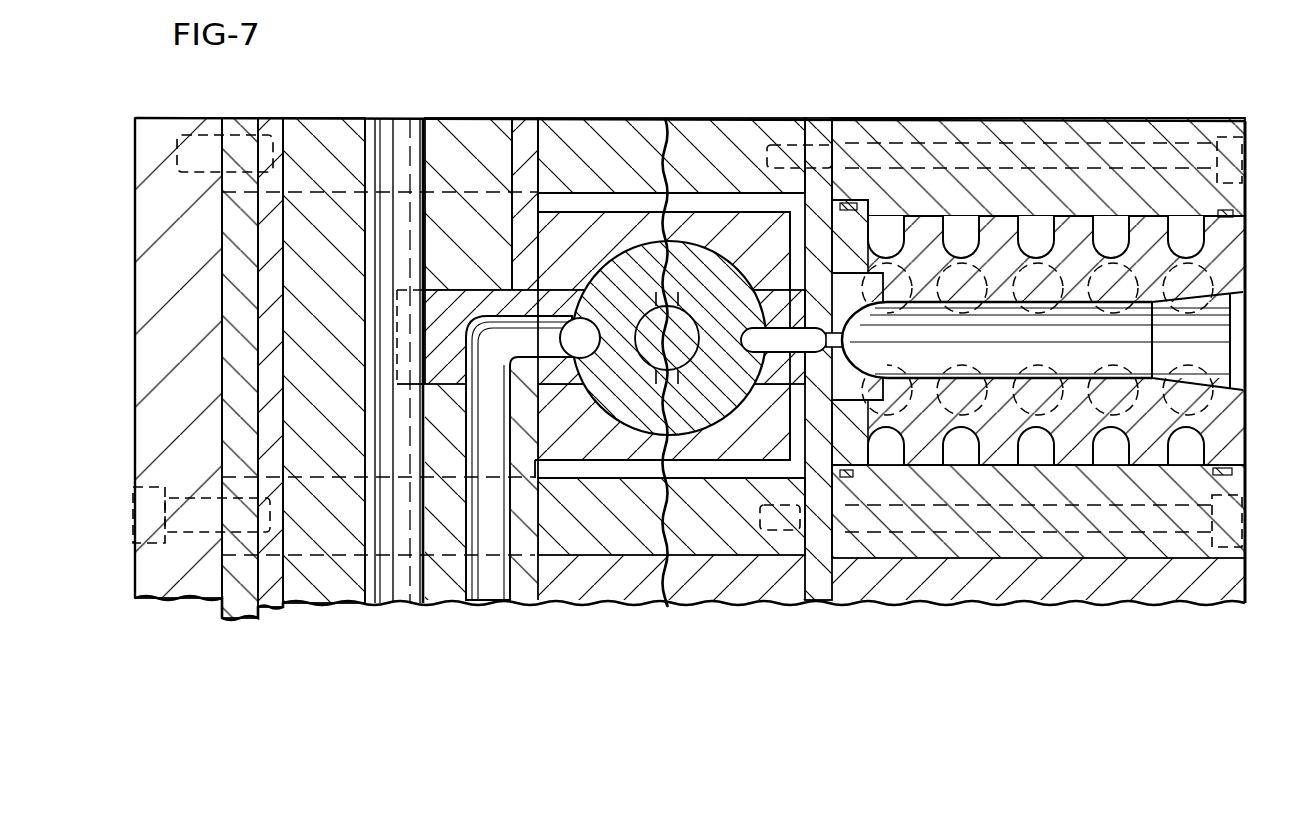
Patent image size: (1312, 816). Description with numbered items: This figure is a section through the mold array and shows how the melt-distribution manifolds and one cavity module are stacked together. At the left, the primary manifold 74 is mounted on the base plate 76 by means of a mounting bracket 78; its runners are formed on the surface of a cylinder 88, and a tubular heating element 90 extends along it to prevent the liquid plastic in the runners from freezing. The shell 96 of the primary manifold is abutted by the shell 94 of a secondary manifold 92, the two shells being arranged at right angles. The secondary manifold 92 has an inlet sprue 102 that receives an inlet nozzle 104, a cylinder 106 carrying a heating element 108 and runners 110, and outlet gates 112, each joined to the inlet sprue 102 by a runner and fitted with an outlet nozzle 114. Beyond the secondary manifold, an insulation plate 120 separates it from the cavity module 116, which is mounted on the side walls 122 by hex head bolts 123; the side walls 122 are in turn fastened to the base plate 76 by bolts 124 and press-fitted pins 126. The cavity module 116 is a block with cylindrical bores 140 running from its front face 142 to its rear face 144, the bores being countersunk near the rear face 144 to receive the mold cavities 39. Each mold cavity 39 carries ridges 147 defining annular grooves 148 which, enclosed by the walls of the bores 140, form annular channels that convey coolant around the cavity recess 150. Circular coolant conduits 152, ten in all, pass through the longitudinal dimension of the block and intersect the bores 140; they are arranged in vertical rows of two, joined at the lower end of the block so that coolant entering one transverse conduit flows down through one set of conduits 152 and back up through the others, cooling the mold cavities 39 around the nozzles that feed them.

The mold cavity 39 is at (1240, 263).
The primary manifold 74 is at (392, 618).
The base plate 76 is at (160, 135).
The mounting bracket 78 is at (240, 612).
The cylinder 88 is at (330, 590).
The tubular heating element 90 is at (408, 590).
The secondary manifold 92 is at (597, 490).
The shell 94 is at (578, 462).
The shell 96 is at (270, 600).
The inlet sprue 102 is at (538, 300).
The inlet nozzle 104 is at (574, 300).
The cylinder 106 is at (635, 425).
The heating element 108 is at (700, 425).
The runner 110 is at (752, 318).
The outlet gate 112 is at (775, 300).
The outlet nozzle 114 is at (676, 208).
The cavity module 116 is at (1027, 102).
The insulation plate 120 is at (820, 540).
The side wall 122 is at (733, 133).
The hex head bolt 123 is at (1222, 137).
The bolt 124 is at (156, 548).
The press-fitted pin 126 is at (214, 135).
The cylindrical bore 140 is at (1235, 232).
The front face 142 is at (1240, 196).
The rear face 144 is at (820, 135).
The ridge 147 is at (1152, 455).
The annular groove 148 is at (1190, 452).
The cavity recess 150 is at (1243, 380).
The circular coolant conduit 152 is at (1062, 420).